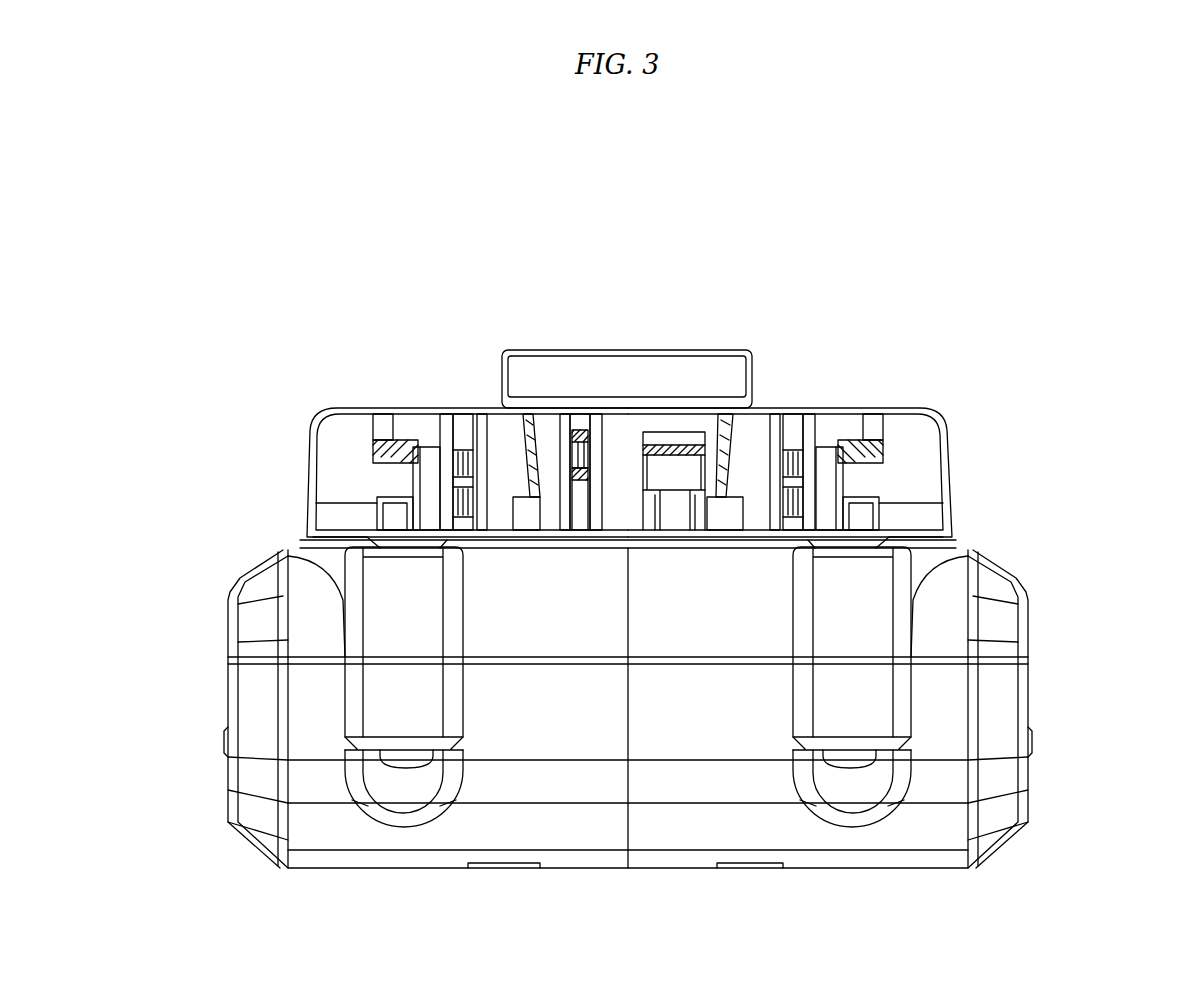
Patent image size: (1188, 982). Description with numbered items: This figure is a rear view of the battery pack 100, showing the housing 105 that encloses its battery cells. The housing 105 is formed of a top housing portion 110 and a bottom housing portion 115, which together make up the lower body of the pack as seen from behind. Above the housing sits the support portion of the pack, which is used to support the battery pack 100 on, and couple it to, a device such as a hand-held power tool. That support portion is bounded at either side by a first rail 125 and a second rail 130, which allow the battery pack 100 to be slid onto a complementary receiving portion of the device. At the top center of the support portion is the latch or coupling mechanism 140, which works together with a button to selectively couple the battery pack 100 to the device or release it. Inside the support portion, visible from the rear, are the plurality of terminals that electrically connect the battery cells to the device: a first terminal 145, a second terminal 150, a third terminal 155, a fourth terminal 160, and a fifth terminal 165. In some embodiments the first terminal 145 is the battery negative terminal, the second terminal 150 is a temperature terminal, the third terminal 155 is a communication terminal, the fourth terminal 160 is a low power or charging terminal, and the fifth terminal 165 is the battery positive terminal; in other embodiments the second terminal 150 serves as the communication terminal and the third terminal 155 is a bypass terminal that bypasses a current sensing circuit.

The battery pack 100 is at (1078, 219).
The housing 105 is at (1052, 558).
The top housing portion 110 is at (228, 590).
The bottom housing portion 115 is at (1034, 768).
The first rail 125 is at (372, 428).
The second rail 130 is at (880, 428).
The coupling mechanism 140 is at (602, 352).
The first terminal 145 is at (478, 522).
The second terminal 150 is at (603, 532).
The third terminal 155 is at (587, 428).
The fourth terminal 160 is at (687, 462).
The fifth terminal 165 is at (793, 510).